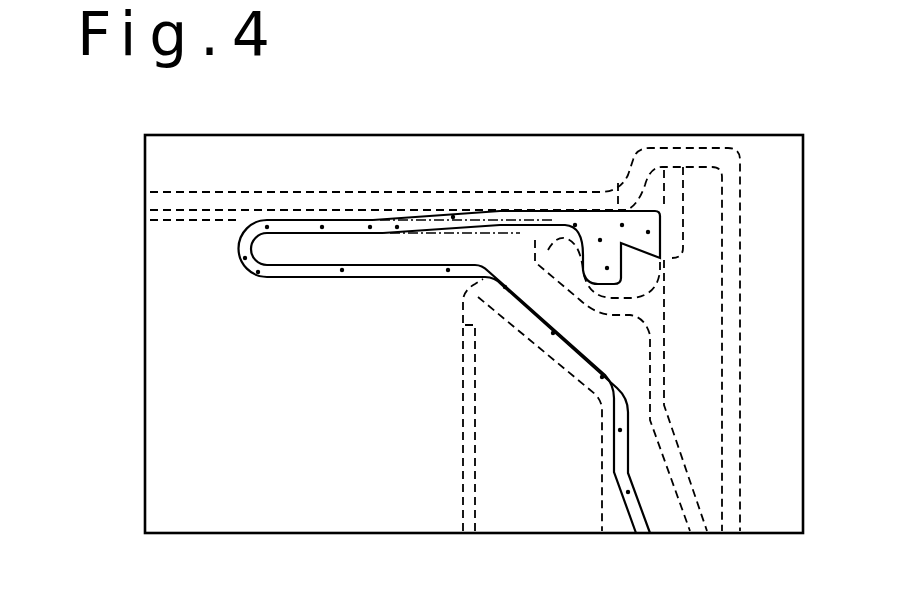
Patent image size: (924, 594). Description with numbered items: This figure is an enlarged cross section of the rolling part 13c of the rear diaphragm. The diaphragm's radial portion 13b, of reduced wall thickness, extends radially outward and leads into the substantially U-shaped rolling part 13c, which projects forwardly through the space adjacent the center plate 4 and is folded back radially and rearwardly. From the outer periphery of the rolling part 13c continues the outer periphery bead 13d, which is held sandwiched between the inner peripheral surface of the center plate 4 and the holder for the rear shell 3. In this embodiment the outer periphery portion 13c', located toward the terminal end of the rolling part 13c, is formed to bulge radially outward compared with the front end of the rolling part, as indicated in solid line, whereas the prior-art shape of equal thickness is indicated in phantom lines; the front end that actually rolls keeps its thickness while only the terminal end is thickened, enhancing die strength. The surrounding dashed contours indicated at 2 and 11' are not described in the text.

The seat pad 2 is at (238, 192).
The rear shell 3 is at (692, 498).
The center plate 4 is at (180, 212).
The seat frame 11' is at (490, 429).
The radial portion 13b is at (615, 478).
The rolling part 13c is at (270, 264).
The outer periphery portion 13c' is at (467, 156).
The outer periphery bead 13d is at (600, 228).